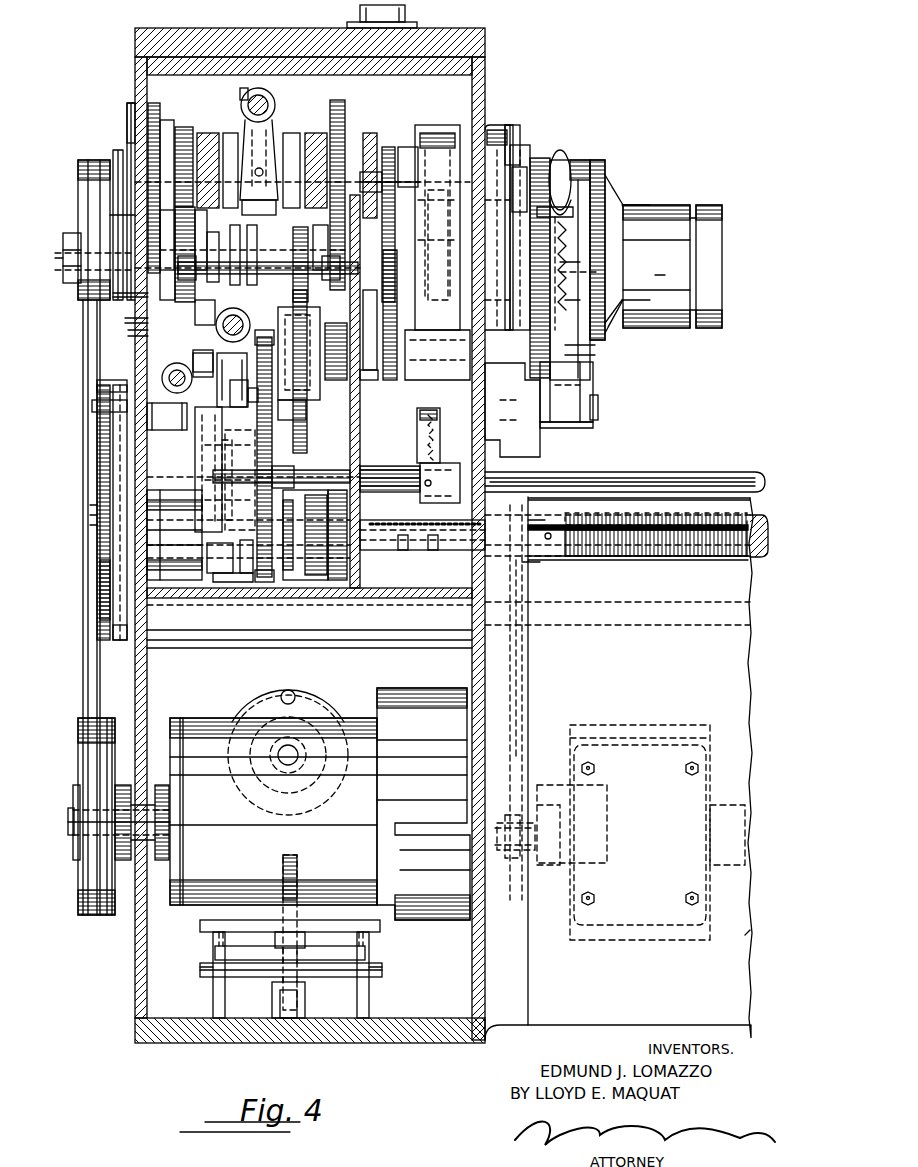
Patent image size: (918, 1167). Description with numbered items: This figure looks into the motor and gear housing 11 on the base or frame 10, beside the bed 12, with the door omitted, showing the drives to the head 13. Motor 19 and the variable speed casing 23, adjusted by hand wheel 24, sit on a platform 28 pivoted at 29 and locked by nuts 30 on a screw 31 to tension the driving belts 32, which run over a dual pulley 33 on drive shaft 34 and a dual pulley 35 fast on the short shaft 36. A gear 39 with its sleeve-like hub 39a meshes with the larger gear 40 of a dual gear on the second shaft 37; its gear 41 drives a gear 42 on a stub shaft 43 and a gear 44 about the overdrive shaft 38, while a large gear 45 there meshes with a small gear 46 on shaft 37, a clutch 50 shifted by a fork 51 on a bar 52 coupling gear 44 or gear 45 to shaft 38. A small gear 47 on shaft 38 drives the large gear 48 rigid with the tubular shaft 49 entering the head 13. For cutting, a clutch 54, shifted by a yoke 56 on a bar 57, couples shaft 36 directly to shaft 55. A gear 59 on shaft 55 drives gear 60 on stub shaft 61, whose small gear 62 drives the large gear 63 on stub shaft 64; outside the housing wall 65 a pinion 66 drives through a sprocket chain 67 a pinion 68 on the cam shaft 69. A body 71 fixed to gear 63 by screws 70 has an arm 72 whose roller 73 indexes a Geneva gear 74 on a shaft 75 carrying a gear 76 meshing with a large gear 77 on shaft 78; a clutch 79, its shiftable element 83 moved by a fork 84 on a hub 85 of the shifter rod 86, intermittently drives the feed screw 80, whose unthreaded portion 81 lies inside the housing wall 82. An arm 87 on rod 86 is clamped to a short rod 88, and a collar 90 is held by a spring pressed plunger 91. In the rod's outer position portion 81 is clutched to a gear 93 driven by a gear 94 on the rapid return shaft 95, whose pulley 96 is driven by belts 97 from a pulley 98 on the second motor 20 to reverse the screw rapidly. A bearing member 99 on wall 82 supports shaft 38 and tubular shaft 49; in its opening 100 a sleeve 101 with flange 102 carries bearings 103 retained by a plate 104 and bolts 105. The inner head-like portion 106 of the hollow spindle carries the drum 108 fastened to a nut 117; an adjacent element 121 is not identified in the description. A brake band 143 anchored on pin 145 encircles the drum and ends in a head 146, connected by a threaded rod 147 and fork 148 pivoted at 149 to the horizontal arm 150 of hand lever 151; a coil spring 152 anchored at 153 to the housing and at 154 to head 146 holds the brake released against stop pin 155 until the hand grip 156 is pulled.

The base or frame 10 is at (758, 946).
The motor and gear housing 11 is at (500, 63).
The bed 12 is at (700, 545).
The head 13 is at (631, 177).
The electric motor 19 is at (462, 900).
The second electric motor 20 is at (648, 928).
The casing 23 is at (196, 926).
The hand wheel 24 is at (280, 808).
The platform 28 is at (249, 942).
The pivot 29 is at (200, 970).
The nuts 30 is at (300, 942).
The screw 31 is at (298, 870).
The driving belts 32 is at (100, 702).
The dual pulley 33 is at (80, 903).
The drive shaft 34 is at (70, 827).
The dual pulley 35 is at (78, 186).
The short shaft 36 is at (64, 248).
The second shaft 37 is at (247, 267).
The overdrive shaft 38 is at (376, 150).
The gear 39 is at (66, 283).
The sleeve-like hub 39a is at (138, 331).
The larger gear 40 is at (148, 293).
The gear 41 is at (135, 318).
The gear 42 is at (192, 213).
The stub shaft 43 is at (112, 216).
The gear 44 is at (148, 130).
The large diameter gear 45 is at (345, 118).
The small diameter gear 46 is at (336, 307).
The small diameter gear 47 is at (388, 148).
The large diameter gear 48 is at (385, 378).
The tubular shaft 49 is at (397, 300).
The clutch 50 is at (280, 125).
The fork 51 is at (243, 118).
The bar 52 is at (270, 105).
The clutch 54 is at (199, 316).
The shaft 55 is at (265, 240).
The yoke 56 is at (210, 315).
The bar 57 is at (213, 342).
The gear 59 is at (300, 229).
The gear 60 is at (273, 442).
The stub shaft 61 is at (372, 382).
The small gear 62 is at (262, 338).
The large gear 63 is at (273, 422).
The stub shaft 64 is at (222, 455).
The wall 65 is at (135, 101).
The pinion 66 is at (100, 482).
The sprocket chain 67 is at (100, 580).
The pinion 68 is at (118, 640).
The cam shaft 69 is at (622, 622).
The screws 70 is at (307, 416).
The body 71 is at (218, 425).
The arm 72 is at (240, 392).
The roller 73 is at (229, 380).
The Geneva gear 74 is at (200, 365).
The shaft 75 is at (100, 389).
The gear 76 is at (95, 411).
The large diameter gear 77 is at (96, 516).
The shaft 78 is at (172, 552).
The clutch means 79 is at (225, 599).
The feed screw 80 is at (650, 552).
The inner portion 81 is at (438, 552).
The wall 82 is at (490, 108).
The shiftable element 83 is at (240, 600).
The fork 84 is at (297, 518).
The hub 85 is at (290, 480).
The shifter rod 86 is at (652, 474).
The arm 87 is at (160, 422).
The short rod 88 is at (165, 380).
The collar 90 is at (420, 505).
The spring pressed plunger 91 is at (440, 456).
The gear 93 is at (338, 492).
The gear 94 is at (405, 546).
The rapid traverse or return shaft 95 is at (433, 550).
The pulley 96 is at (522, 574).
The belts 97 is at (524, 653).
The pulley 98 is at (522, 812).
The bearing member 99 is at (521, 121).
The opening 100 is at (416, 330).
The sleeve 101 is at (440, 352).
The flange 102 is at (512, 125).
The bearings 103 is at (446, 282).
The plate 104 is at (520, 168).
The bolts 105 is at (538, 205).
The inner head-like portion 106 is at (605, 270).
The drum 108 is at (605, 172).
The nut 117 is at (652, 207).
The spindle cap 121 is at (705, 207).
The brake band 143 is at (575, 162).
The pivot pin 145 is at (597, 412).
The head 146 is at (567, 302).
The adjustable threaded rod 147 is at (578, 364).
The link or fork 148 is at (582, 375).
The pivot 149 is at (590, 428).
The horizontal arm 150 is at (563, 426).
The hand lever 151 is at (568, 263).
The coil spring 152 is at (665, 275).
The spring anchor 153 is at (563, 195).
The spring anchor 154 is at (620, 332).
The stop pin 155 is at (567, 397).
The hand grip 156 is at (560, 160).